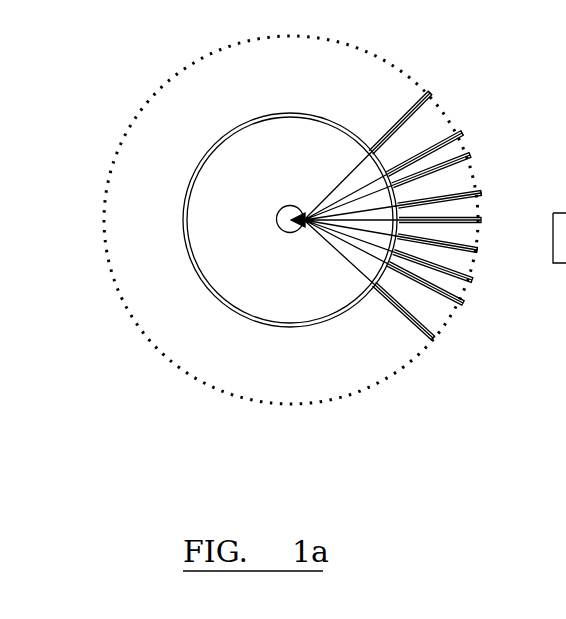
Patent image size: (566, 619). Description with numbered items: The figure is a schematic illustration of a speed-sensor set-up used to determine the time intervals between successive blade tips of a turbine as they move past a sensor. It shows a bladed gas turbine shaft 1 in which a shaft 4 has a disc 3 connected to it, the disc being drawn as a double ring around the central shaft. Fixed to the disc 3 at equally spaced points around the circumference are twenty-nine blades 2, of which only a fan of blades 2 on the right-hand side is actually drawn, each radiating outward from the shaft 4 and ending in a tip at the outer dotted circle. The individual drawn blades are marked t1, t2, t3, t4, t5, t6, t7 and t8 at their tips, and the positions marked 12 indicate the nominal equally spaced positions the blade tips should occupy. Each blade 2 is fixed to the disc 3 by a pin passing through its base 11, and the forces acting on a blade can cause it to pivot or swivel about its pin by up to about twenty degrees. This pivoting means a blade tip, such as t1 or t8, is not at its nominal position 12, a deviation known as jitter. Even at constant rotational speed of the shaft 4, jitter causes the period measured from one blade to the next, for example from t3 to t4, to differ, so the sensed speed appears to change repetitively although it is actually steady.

The bladed gas turbine shaft 1 is at (156, 253).
The blade 2 is at (455, 176).
The disc 3 is at (222, 282).
The shaft 4 is at (288, 226).
The base 11 is at (381, 270).
The nominal equally spaced positions 12 is at (444, 100).
The tooth 1 t1 is at (414, 122).
The tooth 2 t2 is at (436, 150).
The tooth 3 t3 is at (447, 170).
The tooth 4 t4 is at (452, 203).
The tooth 5 t5 is at (453, 234).
The tooth 6 t6 is at (448, 260).
The tooth 7 t7 is at (440, 283).
The tooth 8 t8 is at (426, 304).